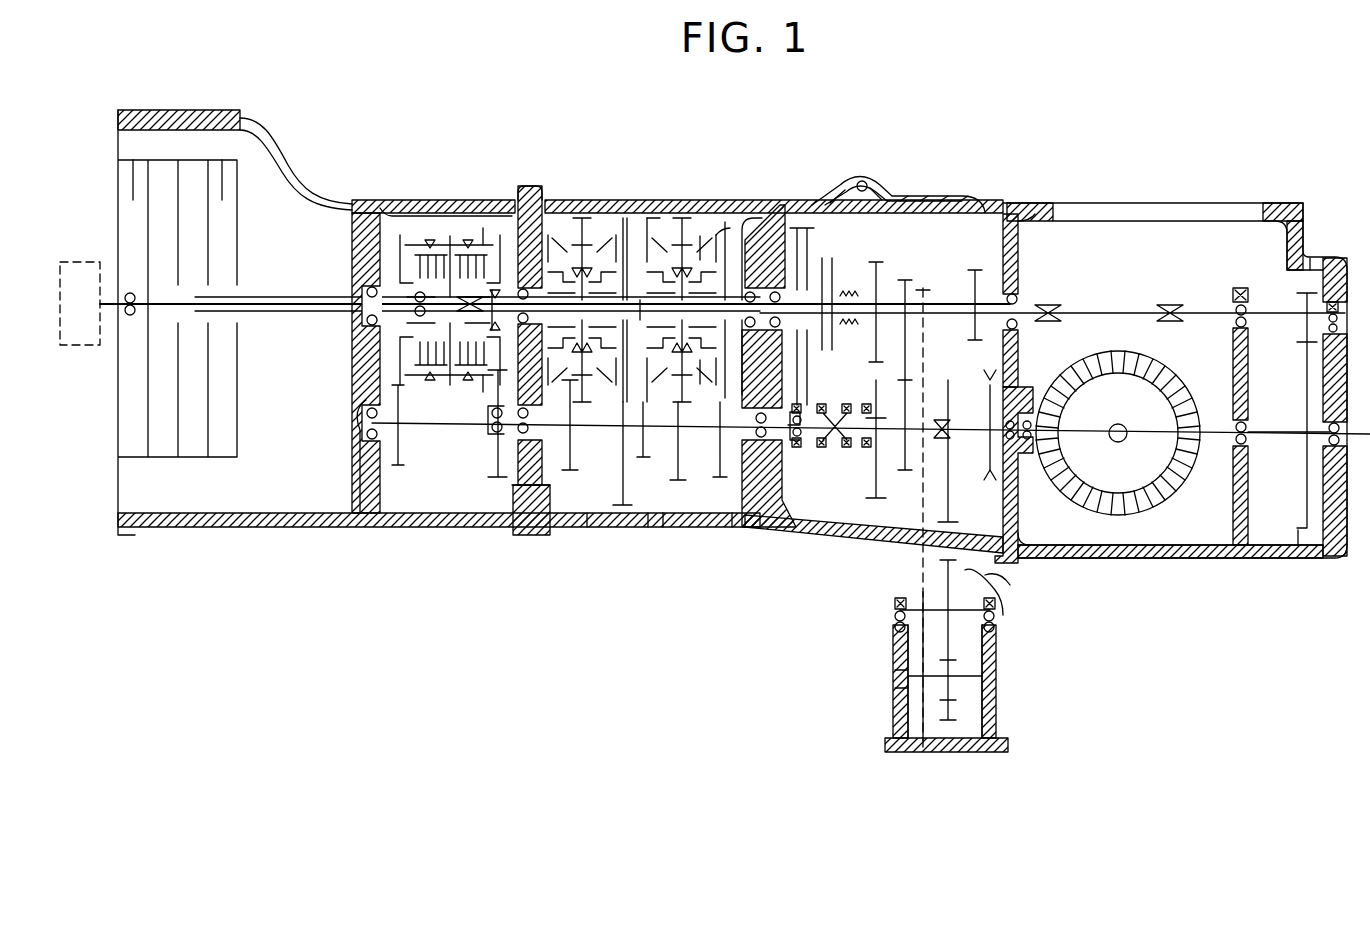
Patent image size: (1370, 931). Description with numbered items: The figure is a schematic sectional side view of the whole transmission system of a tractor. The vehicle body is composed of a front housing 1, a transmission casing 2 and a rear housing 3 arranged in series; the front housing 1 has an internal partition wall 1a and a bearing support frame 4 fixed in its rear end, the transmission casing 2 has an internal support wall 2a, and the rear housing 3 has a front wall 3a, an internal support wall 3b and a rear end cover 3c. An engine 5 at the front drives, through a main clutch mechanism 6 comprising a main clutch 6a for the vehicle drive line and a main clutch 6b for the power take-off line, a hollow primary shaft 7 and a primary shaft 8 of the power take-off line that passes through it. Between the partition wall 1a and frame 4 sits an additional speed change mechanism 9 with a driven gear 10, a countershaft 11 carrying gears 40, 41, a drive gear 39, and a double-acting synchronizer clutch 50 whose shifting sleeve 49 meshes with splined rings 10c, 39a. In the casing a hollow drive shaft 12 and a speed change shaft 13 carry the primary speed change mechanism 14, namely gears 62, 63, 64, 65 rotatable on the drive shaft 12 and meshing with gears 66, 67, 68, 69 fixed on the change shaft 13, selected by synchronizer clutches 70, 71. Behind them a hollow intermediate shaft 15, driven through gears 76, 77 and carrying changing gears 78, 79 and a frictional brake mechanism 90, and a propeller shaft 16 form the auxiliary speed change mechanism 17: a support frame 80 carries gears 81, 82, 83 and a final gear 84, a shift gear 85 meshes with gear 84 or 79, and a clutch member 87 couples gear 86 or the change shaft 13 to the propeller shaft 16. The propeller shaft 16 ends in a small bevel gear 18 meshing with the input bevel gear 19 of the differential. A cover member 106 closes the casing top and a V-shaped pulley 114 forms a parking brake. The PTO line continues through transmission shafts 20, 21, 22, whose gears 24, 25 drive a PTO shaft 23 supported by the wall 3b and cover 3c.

The front housing 1 is at (250, 530).
The partition wall 1a is at (318, 390).
The transmission casing 2 is at (640, 530).
The support wall 2a is at (738, 530).
The rear housing 3 is at (1165, 560).
The front wall 3a is at (1022, 284).
The support wall 3b is at (1185, 168).
The rear end cover 3c is at (1342, 545).
The bearing support frame 4 is at (505, 500).
The engine 5 is at (75, 348).
The main clutch mechanism 6 is at (175, 496).
The main clutch of vehicle drive-power transmission line 6a is at (220, 196).
The main clutch of power take-off transmission line 6b is at (133, 196).
The hollow primary shaft 7 is at (268, 295).
The primary shaft of power take-off transmission line 8 is at (260, 312).
The additional speed change mechanism 9 is at (457, 490).
The driven gear 10 is at (510, 195).
The splined ring 10c is at (492, 228).
The countershaft 11 is at (440, 395).
The hollow drive shaft 12 is at (641, 298).
The speed change shaft 13 is at (678, 410).
The primary speed change mechanism 14 is at (587, 530).
The hollow intermediate shaft 15 is at (892, 292).
The propeller shaft 16 is at (897, 467).
The auxiliary speed change mechanism 17 is at (858, 517).
The small bevel gear 18 is at (1045, 368).
The input bevel gear 19 is at (1178, 484).
The transmission shaft 20 is at (744, 225).
The transmission shaft 21 is at (1118, 306).
The transmission shaft 22 is at (1250, 173).
The PTO shaft 23 is at (1276, 436).
The speed-reduction meshing gear 24 is at (1318, 292).
The speed-reduction meshing gear 25 is at (1272, 621).
The drive gear 39 is at (397, 243).
The splined ring 39a is at (412, 243).
The gear 40 is at (395, 500).
The gear 41 is at (468, 500).
The shifting sleeve 49 is at (462, 236).
The double-acting synchronizer clutch 50 is at (440, 377).
The gear 62 is at (583, 237).
The gear 63 is at (612, 245).
The gear 64 is at (650, 240).
The gear 65 is at (720, 240).
The gear 66 is at (541, 512).
The gear 67 is at (648, 515).
The gear 68 is at (663, 512).
The gear 69 is at (710, 574).
The double-acting synchronizer clutch 70 is at (578, 400).
The double-acting synchronizer clutch 71 is at (700, 236).
The gear 76 is at (785, 528).
The gear 77 is at (792, 232).
The changing gear 78 is at (898, 250).
The changing gear 79 is at (926, 262).
The support frame 80 is at (996, 712).
The gear 81 is at (895, 786).
The gear 82 is at (948, 722).
The gear 83 is at (985, 580).
The final gear 84 is at (978, 270).
The shift gear 85 is at (950, 530).
The gear 86 is at (878, 520).
The clutch member 87 is at (826, 487).
The frictional brake mechanism 90 is at (833, 262).
The cover member 106 is at (880, 290).
The V-shaped pulley 114 is at (965, 504).